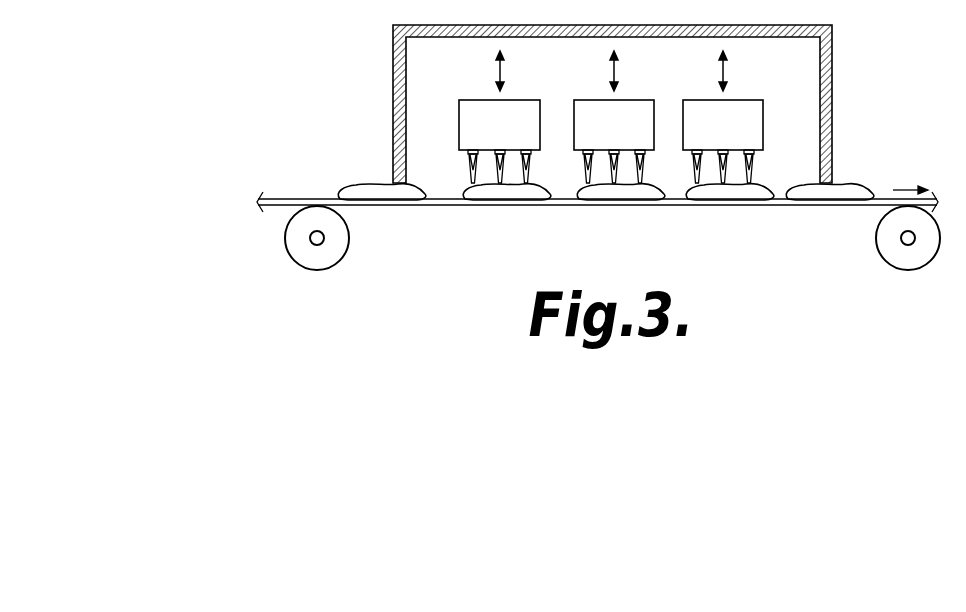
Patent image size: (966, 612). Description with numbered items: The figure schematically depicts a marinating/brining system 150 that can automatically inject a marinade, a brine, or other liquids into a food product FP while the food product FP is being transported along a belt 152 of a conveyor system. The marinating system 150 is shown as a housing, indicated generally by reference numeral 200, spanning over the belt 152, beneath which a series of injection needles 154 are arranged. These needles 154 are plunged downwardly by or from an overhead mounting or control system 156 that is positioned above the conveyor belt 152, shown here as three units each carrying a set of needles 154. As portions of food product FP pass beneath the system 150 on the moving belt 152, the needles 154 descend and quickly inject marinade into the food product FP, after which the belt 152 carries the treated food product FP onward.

The food processing apparatus housing 200 is at (256, 58).
The marinating/brining system 150 is at (872, 54).
The belt 152 is at (889, 197).
The injection needles 154 is at (470, 164).
The overhead mounting/control system 156 is at (477, 102).
The food product FP is at (359, 185).